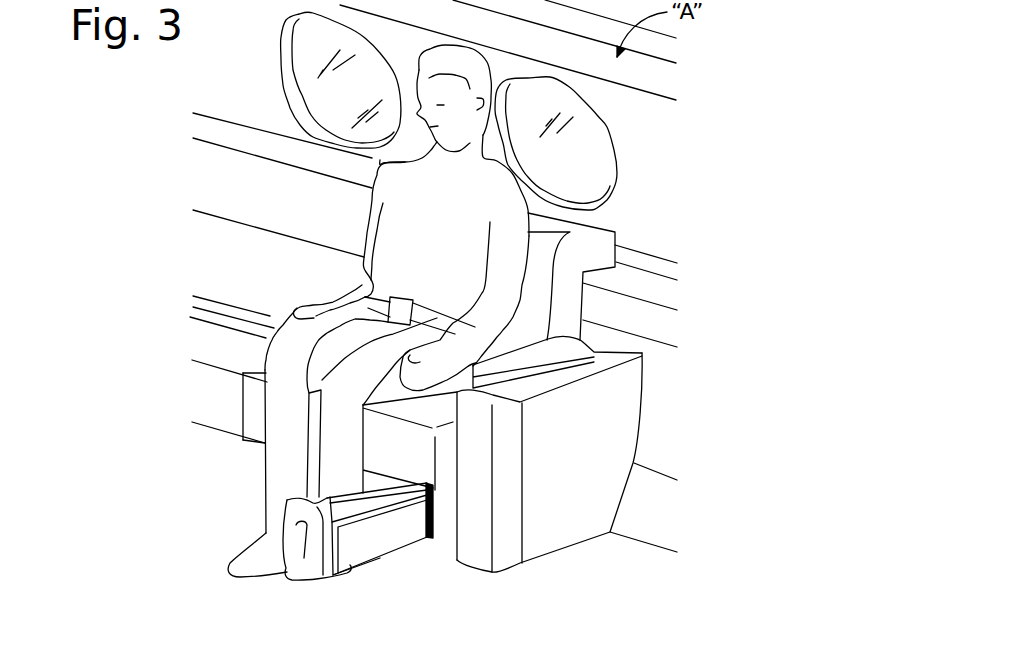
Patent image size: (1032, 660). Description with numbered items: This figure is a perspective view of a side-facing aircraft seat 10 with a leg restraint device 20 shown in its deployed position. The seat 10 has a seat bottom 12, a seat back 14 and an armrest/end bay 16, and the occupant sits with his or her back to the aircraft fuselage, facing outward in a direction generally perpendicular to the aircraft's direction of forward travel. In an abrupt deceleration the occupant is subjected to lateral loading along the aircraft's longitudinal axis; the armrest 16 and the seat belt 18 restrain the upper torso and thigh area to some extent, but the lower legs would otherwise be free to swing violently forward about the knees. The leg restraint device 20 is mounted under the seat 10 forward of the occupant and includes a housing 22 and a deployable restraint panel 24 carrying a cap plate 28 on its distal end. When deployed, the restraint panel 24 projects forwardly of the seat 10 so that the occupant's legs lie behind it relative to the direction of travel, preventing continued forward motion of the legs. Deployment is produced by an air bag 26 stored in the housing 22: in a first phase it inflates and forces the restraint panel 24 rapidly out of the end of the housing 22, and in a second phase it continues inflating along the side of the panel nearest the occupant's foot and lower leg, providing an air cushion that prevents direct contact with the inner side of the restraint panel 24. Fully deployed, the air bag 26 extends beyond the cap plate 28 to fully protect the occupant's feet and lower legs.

The seat 10 is at (622, 203).
The seat bottom 12 is at (255, 402).
The seat back 14 is at (567, 297).
The armrest/end bay 16 is at (610, 390).
The seat belt 18 is at (372, 292).
The leg restraint device 20 is at (417, 558).
The housing 22 is at (443, 512).
The restraint panel 24 is at (380, 538).
The air bag 26 is at (317, 502).
The cap plate 28 is at (333, 582).